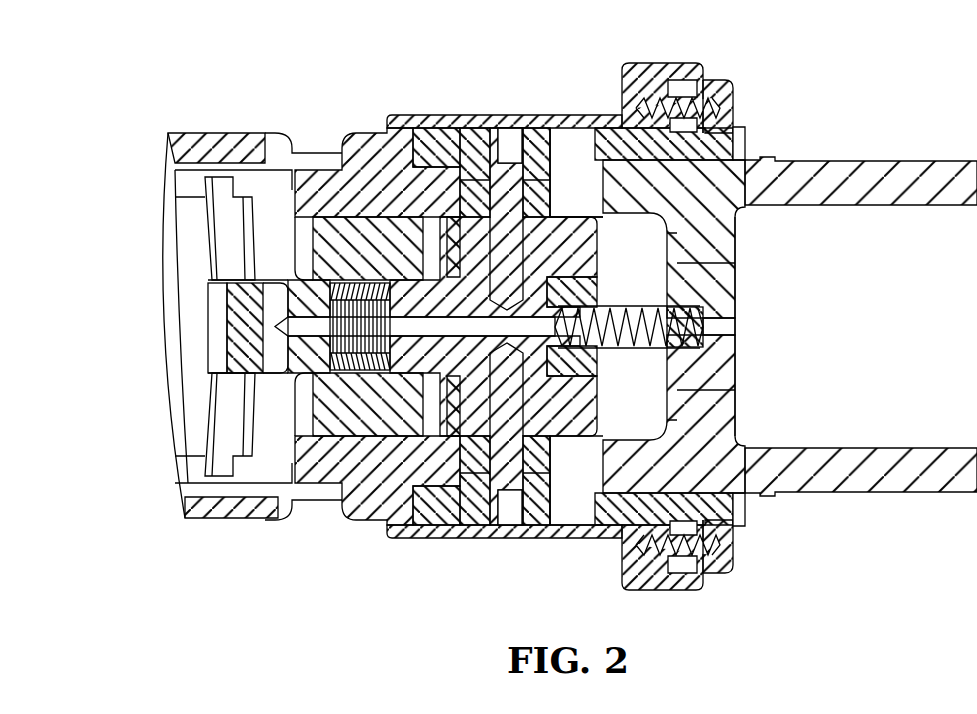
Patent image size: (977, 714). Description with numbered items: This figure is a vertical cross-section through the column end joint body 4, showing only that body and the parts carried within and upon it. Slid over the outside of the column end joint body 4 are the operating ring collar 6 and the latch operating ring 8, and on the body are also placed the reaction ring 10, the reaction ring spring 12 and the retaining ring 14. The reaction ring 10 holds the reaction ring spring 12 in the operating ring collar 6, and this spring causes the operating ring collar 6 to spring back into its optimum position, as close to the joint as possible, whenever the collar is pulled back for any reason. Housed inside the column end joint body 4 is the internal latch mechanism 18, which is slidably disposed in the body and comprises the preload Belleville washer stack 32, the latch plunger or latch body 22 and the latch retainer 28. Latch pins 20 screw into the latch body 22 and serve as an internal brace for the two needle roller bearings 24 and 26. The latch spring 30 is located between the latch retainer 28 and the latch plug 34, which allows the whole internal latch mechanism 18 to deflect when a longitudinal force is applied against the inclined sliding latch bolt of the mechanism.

The column end joint body 4 is at (888, 490).
The operating ring collar 6 is at (650, 63).
The latch operating ring 8 is at (440, 522).
The reaction ring 10 is at (705, 85).
The reaction ring spring 12 is at (722, 100).
The retaining ring 14 is at (750, 510).
The internal latch mechanism 18 is at (290, 455).
The latch pins 20 is at (495, 132).
The latch body 22 is at (380, 522).
The needle roller bearing 24 is at (565, 180).
The needle roller bearing 26 is at (477, 130).
The latch retainer 28 is at (603, 362).
The latch spring 30 is at (628, 306).
The preload Belleville washer stack 32 is at (308, 387).
The latch plug 34 is at (740, 362).